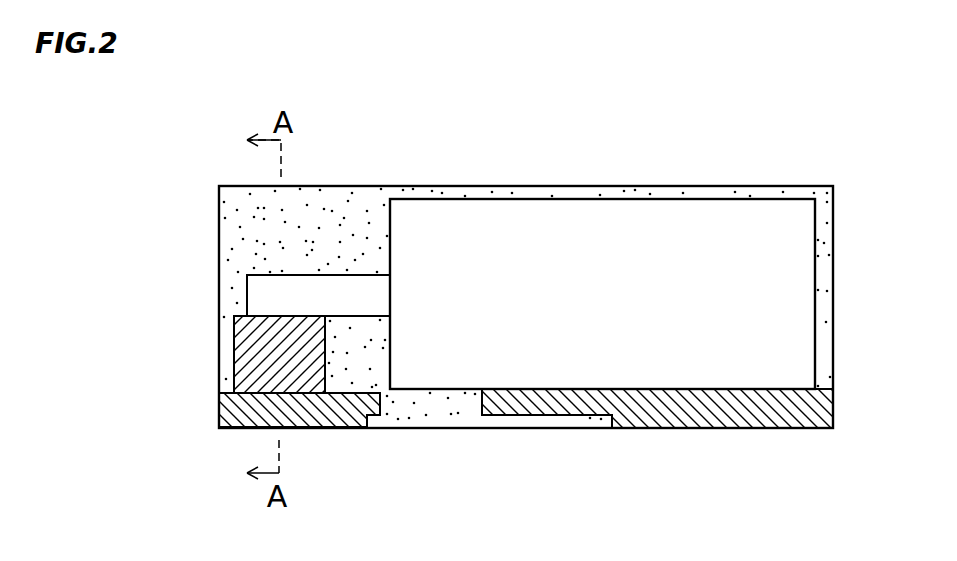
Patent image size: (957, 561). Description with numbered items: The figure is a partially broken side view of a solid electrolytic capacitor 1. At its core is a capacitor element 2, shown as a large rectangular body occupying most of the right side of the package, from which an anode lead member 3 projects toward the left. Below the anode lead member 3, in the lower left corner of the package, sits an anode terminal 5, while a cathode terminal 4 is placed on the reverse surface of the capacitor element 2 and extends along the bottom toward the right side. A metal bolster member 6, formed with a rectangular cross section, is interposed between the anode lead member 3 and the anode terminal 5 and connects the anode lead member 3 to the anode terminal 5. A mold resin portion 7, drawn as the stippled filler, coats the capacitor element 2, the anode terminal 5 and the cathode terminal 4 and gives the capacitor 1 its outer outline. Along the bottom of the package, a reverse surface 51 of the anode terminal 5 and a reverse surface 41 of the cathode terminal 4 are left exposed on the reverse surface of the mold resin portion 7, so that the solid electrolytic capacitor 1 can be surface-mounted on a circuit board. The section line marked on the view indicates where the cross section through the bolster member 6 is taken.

The solid electrolytic capacitor 1 is at (763, 186).
The capacitor element 2 is at (606, 240).
The anode lead member 3 is at (273, 295).
The cathode terminal 4 is at (702, 415).
The reverse surface of the cathode terminal 41 is at (655, 428).
The anode terminal 5 is at (231, 413).
The reverse surface of the anode terminal 51 is at (330, 427).
The metal bolster member 6 is at (250, 355).
The mold resin portion 7 is at (357, 200).